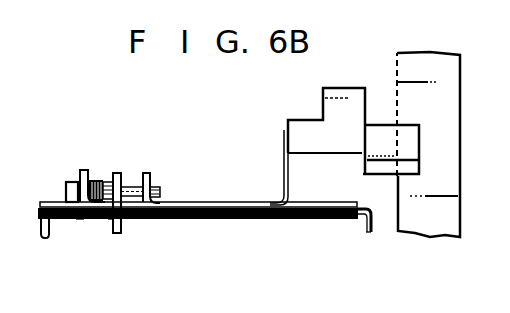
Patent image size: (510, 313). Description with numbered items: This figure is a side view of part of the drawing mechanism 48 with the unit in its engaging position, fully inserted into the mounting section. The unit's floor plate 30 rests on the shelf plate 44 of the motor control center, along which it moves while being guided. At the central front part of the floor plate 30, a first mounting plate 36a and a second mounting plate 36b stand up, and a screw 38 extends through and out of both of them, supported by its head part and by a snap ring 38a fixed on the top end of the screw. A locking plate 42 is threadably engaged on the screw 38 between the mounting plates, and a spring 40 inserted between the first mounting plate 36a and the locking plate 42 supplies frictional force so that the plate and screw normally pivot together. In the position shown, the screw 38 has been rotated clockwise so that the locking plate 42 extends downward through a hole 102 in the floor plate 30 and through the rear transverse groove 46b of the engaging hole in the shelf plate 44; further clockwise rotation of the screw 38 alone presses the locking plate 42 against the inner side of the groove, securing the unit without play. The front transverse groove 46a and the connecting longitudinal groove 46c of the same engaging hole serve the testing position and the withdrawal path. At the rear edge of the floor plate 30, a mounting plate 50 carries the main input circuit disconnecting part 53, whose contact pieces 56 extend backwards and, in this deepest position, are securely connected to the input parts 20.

The input parts 20 is at (435, 67).
The floor plate 30 is at (228, 203).
The first mounting plate 36a is at (86, 172).
The second mounting plate 36b is at (143, 180).
The screw 38 is at (70, 190).
The snap ring 38a is at (149, 221).
The spring 40 is at (107, 178).
The locking plate 42 is at (117, 234).
The shelf plate 44 is at (256, 219).
The front transverse groove 46a is at (48, 237).
The rear transverse groove 46b is at (111, 222).
The longitudinal groove 46c is at (81, 220).
The drawing mechanism 48 is at (68, 146).
The mounting plate 50 is at (283, 158).
The main input circuit disconnecting part 53 is at (350, 105).
The contact pieces 56 is at (384, 135).
The hole 102 is at (133, 222).